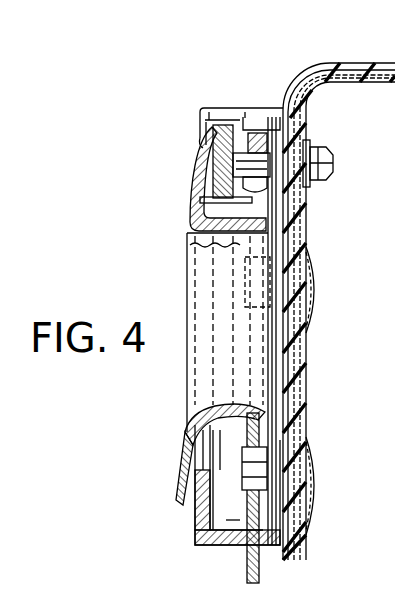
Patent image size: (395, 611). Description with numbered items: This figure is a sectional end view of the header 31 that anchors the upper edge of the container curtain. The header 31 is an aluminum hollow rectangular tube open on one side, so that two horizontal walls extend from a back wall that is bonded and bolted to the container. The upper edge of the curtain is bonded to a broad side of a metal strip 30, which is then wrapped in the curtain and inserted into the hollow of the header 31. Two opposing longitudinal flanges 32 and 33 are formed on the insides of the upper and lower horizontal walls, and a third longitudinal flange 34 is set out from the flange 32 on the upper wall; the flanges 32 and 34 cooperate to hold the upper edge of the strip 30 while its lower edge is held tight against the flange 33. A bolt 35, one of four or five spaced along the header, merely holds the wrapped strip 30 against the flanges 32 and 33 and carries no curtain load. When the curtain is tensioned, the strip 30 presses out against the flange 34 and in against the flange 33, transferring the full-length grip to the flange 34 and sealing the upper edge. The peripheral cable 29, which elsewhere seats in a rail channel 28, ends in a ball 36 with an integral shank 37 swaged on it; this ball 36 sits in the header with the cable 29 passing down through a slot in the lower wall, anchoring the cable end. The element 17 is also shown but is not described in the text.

The sleeve 17 is at (187, 410).
The channel 28 is at (230, 530).
The peripheral cable 29 is at (260, 578).
The metal strip 30 is at (219, 124).
The header 31 is at (262, 100).
The longitudinal flange 32 is at (240, 127).
The longitudinal flange 33 is at (203, 203).
The third longitudinal flange 34 is at (207, 133).
The bolt 35 is at (335, 160).
The ball 36 is at (310, 203).
The shank 37 is at (303, 123).